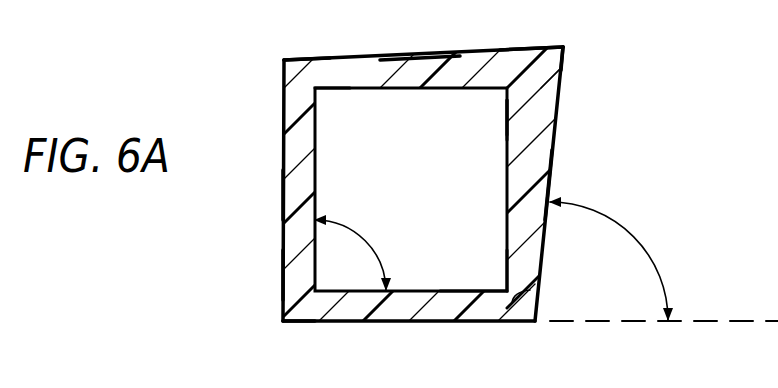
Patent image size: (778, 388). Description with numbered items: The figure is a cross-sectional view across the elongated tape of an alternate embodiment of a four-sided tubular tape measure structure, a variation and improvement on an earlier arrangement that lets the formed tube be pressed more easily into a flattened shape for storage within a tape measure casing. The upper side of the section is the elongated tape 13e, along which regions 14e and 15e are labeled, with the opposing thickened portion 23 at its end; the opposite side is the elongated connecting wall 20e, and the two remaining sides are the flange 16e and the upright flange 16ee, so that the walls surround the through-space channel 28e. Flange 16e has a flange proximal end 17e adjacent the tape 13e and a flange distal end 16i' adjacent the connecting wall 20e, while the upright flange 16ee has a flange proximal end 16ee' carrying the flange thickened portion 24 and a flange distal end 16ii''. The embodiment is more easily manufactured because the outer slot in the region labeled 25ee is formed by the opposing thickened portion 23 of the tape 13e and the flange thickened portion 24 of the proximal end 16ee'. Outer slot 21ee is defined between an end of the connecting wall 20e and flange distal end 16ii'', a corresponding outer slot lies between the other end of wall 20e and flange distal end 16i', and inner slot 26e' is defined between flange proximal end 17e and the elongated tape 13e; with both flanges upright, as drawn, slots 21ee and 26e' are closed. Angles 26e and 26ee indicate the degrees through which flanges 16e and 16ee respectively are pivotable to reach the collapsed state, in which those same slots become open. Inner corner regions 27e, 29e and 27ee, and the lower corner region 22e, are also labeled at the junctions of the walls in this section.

The elongated tape 13e is at (367, 62).
The top wall portion 14e is at (418, 58).
The inner opening 15e is at (447, 89).
The flange 16e is at (291, 187).
The flange distal end 16i' is at (252, 270).
The upright flange 16ee is at (601, 184).
The flange proximal end 16ee' is at (600, 123).
The flange distal end 16ii'' is at (566, 264).
The flange proximal end 17e is at (283, 146).
The elongated connecting wall 20e is at (399, 321).
The outer slot 21ee is at (530, 290).
The bottom-left corner 22e is at (300, 303).
The opposing thickened portion 23 is at (515, 62).
The flange thickened portion 24 is at (553, 90).
The top-right edge 25ee is at (561, 62).
The angle 26e is at (360, 239).
The inner slot 26e' is at (261, 81).
The angle 26ee is at (665, 228).
The inner top-left corner 27e is at (342, 100).
The inner bottom wall surface 27ee is at (478, 258).
The through-space channel 28e is at (400, 165).
The inner top-right corner 29e is at (506, 118).